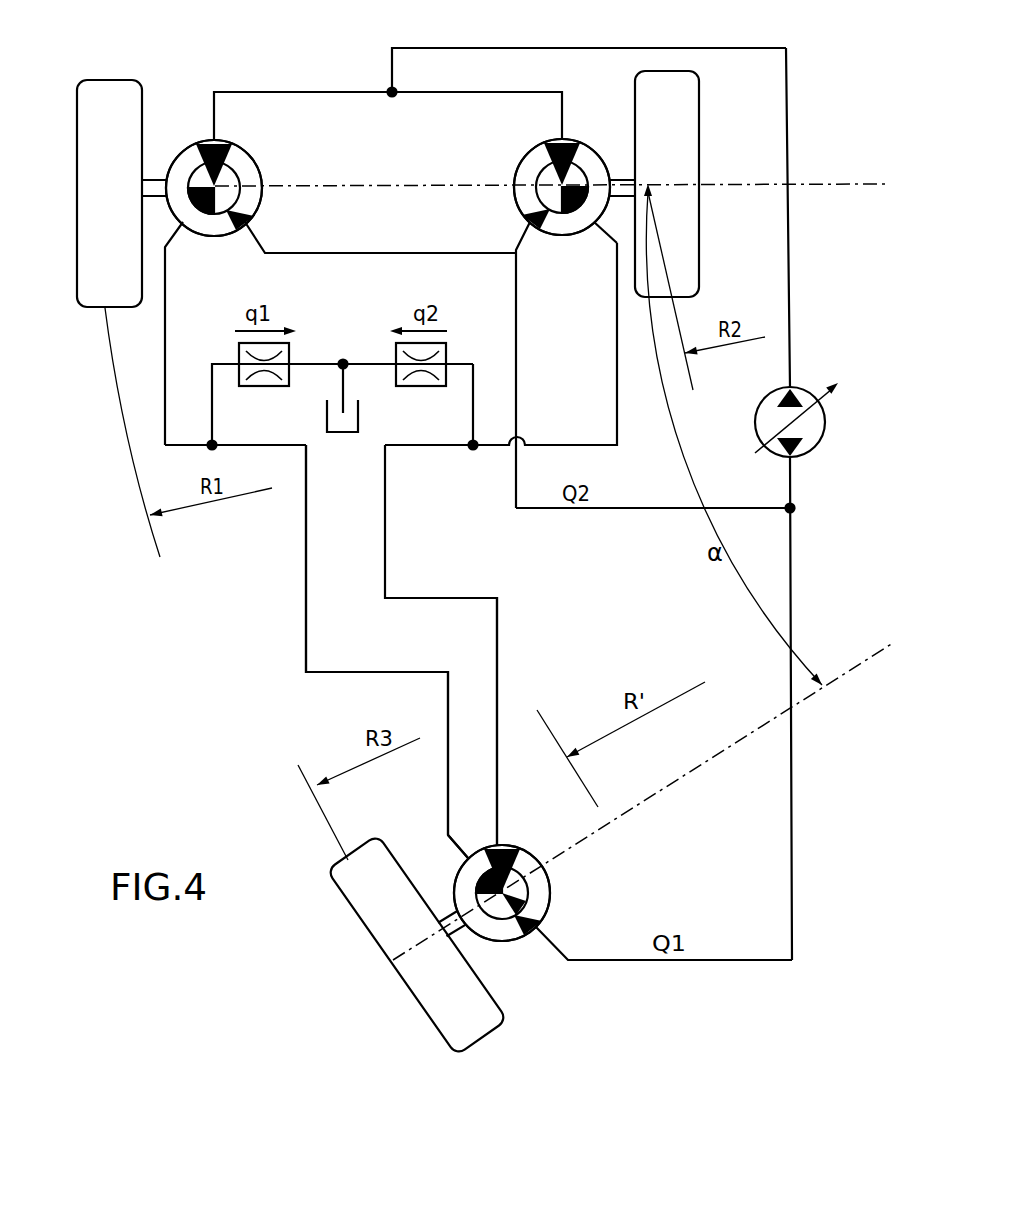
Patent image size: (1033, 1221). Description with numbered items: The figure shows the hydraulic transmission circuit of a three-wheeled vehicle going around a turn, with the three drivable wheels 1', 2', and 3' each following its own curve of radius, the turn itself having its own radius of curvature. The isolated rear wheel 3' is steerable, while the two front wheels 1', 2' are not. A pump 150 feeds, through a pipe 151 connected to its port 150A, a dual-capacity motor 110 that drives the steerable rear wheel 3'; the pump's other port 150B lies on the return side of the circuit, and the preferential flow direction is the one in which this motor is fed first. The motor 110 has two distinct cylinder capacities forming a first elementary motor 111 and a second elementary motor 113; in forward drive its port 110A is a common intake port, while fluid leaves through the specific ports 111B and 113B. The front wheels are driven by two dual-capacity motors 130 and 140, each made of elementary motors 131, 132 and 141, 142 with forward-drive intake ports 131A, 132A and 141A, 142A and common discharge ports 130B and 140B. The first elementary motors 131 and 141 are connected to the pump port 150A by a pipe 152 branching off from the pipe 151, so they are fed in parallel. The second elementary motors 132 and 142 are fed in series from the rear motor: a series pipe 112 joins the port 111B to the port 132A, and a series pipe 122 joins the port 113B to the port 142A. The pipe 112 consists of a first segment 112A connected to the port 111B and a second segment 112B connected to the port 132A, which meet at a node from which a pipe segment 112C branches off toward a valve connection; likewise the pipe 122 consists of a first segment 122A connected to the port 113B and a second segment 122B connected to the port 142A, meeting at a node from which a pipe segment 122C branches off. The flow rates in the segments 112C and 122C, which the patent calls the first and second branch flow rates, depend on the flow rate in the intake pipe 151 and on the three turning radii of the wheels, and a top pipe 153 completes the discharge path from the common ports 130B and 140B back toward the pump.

The front wheel 1' is at (98, 193).
The front wheel 2' is at (680, 184).
The rear wheel 3' is at (417, 945).
The motor 110 is at (575, 882).
The port 110A is at (540, 915).
The first elementary motor 111 is at (495, 915).
The port 111B is at (427, 860).
The second elementary motor 113 is at (550, 873).
The port 113B is at (512, 850).
The series pipe 112 is at (275, 637).
The first segment 112A is at (303, 610).
The second segment 112B is at (165, 368).
The pipe segment 112C is at (318, 358).
The series pipe 122 is at (492, 642).
The first segment 122A is at (388, 578).
The second segment 122B is at (617, 373).
The pipe segment 122C is at (380, 372).
The dual-capacity motor 130 is at (243, 128).
The common discharge port 130B is at (200, 148).
The first elementary motor 131 is at (247, 153).
The forward-drive intake port 131A is at (250, 225).
The second elementary motor 132 is at (242, 180).
The forward-drive intake port 132A is at (207, 218).
The dual-capacity motor 140 is at (522, 130).
The common discharge port 140B is at (563, 140).
The first elementary motor 141 is at (520, 203).
The forward-drive intake port 141A is at (543, 235).
The second elementary motor 142 is at (535, 178).
The forward-drive intake port 142A is at (575, 230).
The pump 150 is at (815, 420).
The port 150A is at (800, 455).
The port 150B is at (800, 385).
The pipe 151 is at (790, 850).
The pipe 152 is at (603, 507).
The supply line to front motors 153 is at (530, 47).